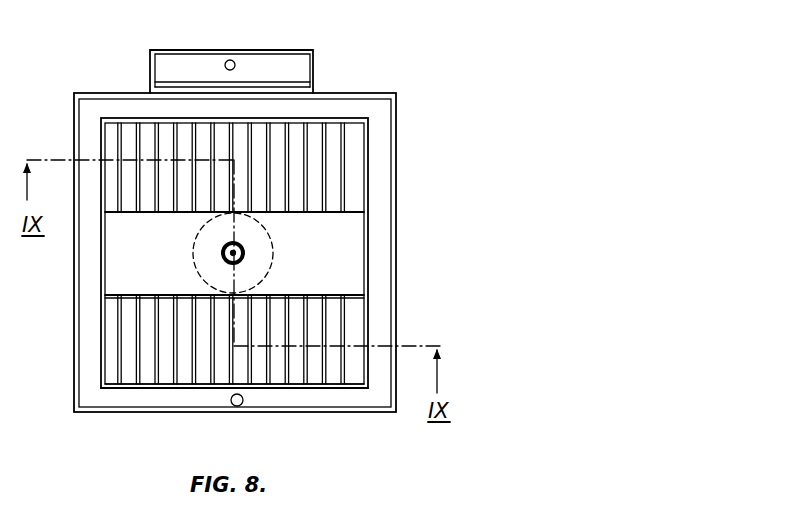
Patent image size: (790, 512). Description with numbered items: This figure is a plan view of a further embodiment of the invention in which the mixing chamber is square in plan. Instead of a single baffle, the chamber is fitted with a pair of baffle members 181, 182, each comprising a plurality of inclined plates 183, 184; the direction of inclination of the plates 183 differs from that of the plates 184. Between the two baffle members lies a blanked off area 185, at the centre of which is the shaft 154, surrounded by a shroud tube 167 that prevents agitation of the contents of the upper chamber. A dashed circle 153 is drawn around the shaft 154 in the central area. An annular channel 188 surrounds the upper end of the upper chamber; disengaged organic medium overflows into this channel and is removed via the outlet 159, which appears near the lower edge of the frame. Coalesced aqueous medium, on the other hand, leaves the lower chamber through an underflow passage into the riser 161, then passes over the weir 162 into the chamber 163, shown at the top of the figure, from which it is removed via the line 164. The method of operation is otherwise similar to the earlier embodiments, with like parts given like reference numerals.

The circle of rotation 153 is at (275, 248).
The shaft 154 is at (224, 250).
The outlet 159 is at (238, 406).
The riser 161 is at (302, 88).
The weir 162 is at (208, 78).
The chamber 163 is at (300, 62).
The line 164 is at (233, 59).
The shroud tube 167 is at (224, 258).
The baffle member 181 is at (128, 150).
The baffle member 182 is at (128, 347).
The inclined plates 183 is at (172, 135).
The inclined plates 184 is at (190, 373).
The blanked off area 185 is at (117, 257).
The annular channel 188 is at (378, 141).